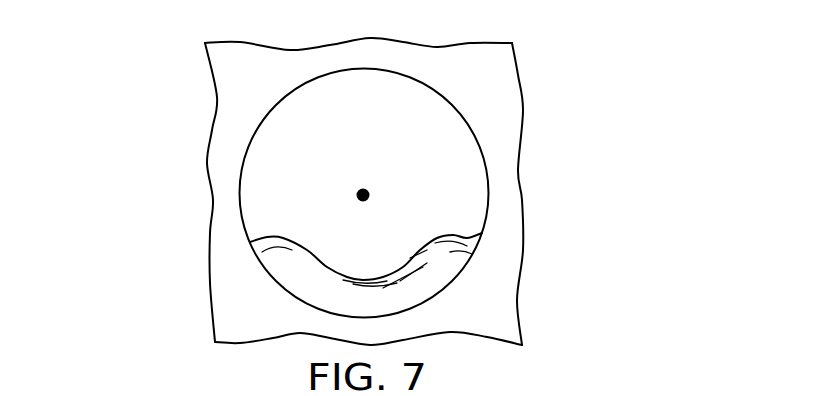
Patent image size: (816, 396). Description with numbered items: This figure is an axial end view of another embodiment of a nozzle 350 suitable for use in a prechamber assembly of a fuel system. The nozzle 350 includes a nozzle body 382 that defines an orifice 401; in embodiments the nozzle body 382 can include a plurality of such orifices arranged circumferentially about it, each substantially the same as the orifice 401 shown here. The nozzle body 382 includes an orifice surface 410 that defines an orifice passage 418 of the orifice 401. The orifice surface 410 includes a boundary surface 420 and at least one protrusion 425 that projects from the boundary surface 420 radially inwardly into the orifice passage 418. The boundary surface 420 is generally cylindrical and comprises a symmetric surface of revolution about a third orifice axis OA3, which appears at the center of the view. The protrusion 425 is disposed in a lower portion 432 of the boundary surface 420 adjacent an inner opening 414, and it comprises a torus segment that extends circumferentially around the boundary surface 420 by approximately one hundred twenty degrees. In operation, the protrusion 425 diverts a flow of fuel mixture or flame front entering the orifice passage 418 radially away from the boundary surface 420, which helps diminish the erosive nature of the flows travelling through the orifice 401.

The nozzle 350 is at (173, 80).
The third orifice axis OA3 is at (363, 195).
The nozzle body 382 is at (233, 183).
The orifice 401 is at (473, 117).
The orifice surface 410 is at (483, 175).
The inner opening 414 is at (245, 173).
The orifice passage 418 is at (293, 195).
The boundary surface 420 is at (413, 83).
The protrusion 425 is at (305, 267).
The lower portion 432 is at (455, 282).